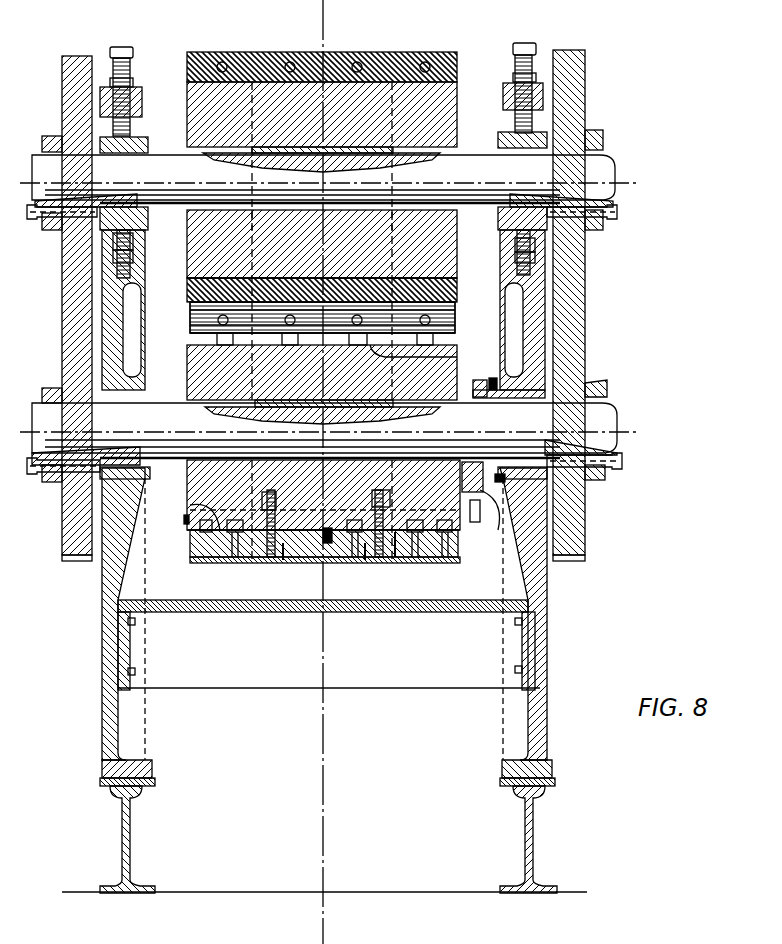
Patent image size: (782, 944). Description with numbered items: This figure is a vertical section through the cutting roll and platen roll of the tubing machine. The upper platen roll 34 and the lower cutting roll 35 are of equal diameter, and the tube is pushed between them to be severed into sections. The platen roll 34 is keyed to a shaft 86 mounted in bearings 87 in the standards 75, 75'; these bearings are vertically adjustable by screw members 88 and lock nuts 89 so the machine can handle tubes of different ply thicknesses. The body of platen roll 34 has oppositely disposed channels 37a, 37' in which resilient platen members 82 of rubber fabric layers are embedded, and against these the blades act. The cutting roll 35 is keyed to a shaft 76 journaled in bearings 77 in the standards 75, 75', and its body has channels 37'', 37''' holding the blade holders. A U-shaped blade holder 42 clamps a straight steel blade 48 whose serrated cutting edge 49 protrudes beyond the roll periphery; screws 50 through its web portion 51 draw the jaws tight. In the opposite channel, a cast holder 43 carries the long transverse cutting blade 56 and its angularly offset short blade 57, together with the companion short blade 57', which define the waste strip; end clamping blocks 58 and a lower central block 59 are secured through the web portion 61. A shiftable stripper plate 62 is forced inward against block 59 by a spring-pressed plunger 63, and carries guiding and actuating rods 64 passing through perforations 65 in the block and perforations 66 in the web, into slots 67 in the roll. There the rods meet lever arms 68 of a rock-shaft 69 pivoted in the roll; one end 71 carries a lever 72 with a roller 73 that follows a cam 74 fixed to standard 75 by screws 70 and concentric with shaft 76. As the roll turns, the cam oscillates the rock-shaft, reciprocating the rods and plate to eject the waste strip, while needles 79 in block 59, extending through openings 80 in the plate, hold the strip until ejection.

The platen roll 34 is at (457, 130).
The cutting roll 35 is at (187, 387).
The cam surface 37a is at (192, 92).
The channel 37' is at (308, 280).
The channel 37'' is at (306, 338).
The channel 37''' is at (311, 541).
The blade holder 42 is at (457, 325).
The blade holder 43 is at (215, 545).
The straight steel blade 48 is at (190, 320).
The cutting edge 49 is at (190, 310).
The screws 50 is at (457, 350).
The web portion 51 is at (217, 345).
The cutting blade 56 is at (446, 557).
The short cutting blade 57 is at (223, 553).
The short cutting blade 57' is at (421, 552).
The clamping block 58 is at (218, 557).
The clamping block 59 is at (352, 557).
The web portion 61 is at (190, 500).
The stripper plate 62 is at (326, 545).
The spring-pressed plunger 63 is at (332, 563).
The guiding and actuating rods 64 is at (270, 557).
The perforations 65 is at (395, 557).
The perforations 66 is at (472, 462).
The slots 67 is at (385, 490).
The lever arms 68 is at (262, 492).
The rock-shaft 69 is at (184, 522).
The screws 70 is at (493, 378).
The end of shaft 71 is at (476, 522).
The lever 72 is at (499, 528).
The roller 73 is at (485, 492).
The cam 74 is at (503, 378).
The standard 75 is at (561, 471).
The standard 75' is at (98, 474).
The shaft 76 is at (617, 417).
The bearings 77 is at (110, 478).
The needles or pins 79 is at (282, 560).
The openings 80 is at (291, 600).
The resilient platen members 82 is at (457, 66).
The shaft 86 is at (615, 162).
The bearings 87 is at (97, 220).
The screw members 88 is at (142, 118).
The lock nuts 89 is at (133, 70).